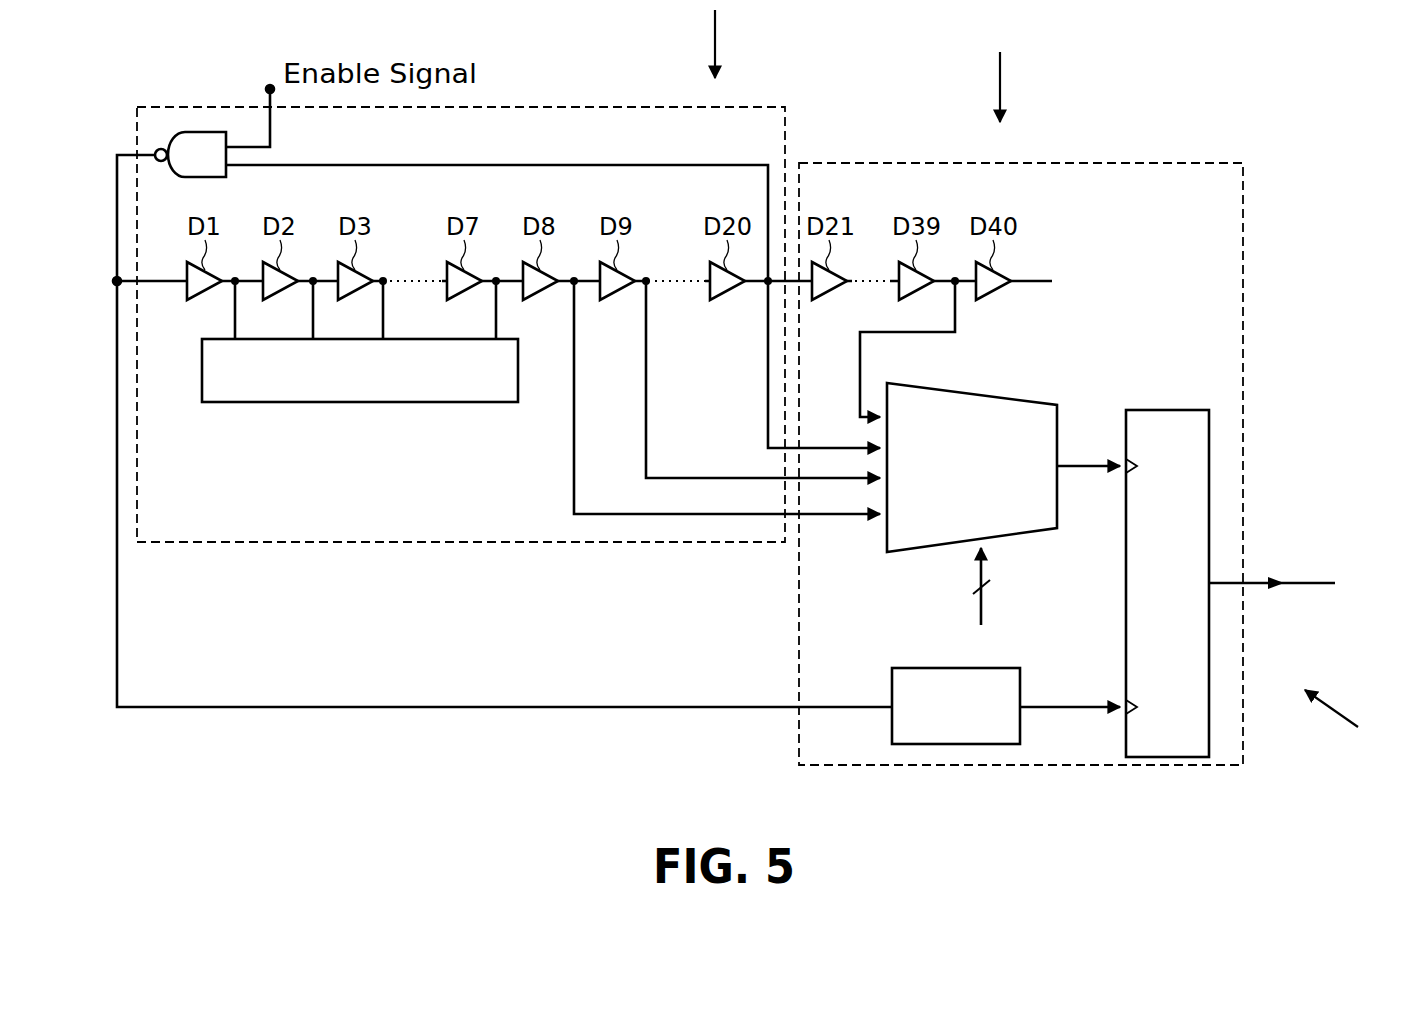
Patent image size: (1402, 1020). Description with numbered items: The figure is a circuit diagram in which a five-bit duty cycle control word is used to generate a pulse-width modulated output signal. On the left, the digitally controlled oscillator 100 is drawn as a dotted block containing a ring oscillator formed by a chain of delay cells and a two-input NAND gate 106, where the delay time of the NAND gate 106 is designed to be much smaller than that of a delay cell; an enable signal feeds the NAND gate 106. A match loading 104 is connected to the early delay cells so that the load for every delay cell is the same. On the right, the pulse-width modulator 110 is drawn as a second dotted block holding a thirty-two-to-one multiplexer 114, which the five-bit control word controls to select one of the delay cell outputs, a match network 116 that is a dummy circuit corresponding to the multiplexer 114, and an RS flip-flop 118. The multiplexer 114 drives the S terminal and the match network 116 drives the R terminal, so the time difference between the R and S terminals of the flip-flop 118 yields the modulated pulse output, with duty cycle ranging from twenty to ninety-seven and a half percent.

The digitally controlled oscillator 100 is at (785, 128).
The match loading 104 is at (360, 402).
The NAND gate 106 is at (210, 177).
The pulse-width modulator 110 is at (1125, 163).
The multiplexer 114 is at (997, 398).
The match network 116 is at (976, 744).
The RS flip-flop 118 is at (1167, 410).